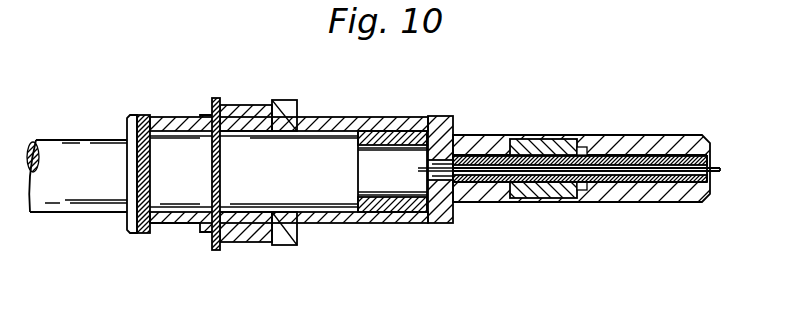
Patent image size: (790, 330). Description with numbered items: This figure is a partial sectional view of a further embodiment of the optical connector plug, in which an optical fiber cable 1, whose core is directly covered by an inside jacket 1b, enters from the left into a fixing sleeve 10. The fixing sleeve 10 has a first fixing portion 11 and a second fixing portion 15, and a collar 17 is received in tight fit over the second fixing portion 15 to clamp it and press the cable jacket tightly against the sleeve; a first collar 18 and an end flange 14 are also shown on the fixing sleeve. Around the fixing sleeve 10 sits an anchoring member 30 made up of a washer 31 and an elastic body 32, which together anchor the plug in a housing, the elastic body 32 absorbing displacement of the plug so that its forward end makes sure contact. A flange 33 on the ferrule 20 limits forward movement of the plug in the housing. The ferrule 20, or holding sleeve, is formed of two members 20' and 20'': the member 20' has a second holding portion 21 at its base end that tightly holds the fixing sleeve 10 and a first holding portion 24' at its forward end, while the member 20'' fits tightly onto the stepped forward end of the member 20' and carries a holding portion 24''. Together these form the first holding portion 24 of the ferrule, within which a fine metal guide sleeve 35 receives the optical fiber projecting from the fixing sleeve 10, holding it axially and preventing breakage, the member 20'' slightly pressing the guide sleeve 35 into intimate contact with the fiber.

The optical fiber cable 1 is at (70, 138).
The inside jacket 1b is at (442, 181).
The fixing sleeve 10 is at (323, 126).
The first fixing portion 11 is at (238, 135).
The flange 14 is at (142, 234).
The second fixing portion 15 is at (380, 145).
The collar 17 is at (172, 228).
The first collar 18 is at (392, 212).
The ferrule 20 is at (582, 128).
The member of the ferrule 20' is at (582, 146).
The member of the ferrule 20'' is at (582, 146).
The second holding portion 21 is at (416, 116).
The first holding portion 24 is at (544, 206).
The first holding portion 24' is at (544, 188).
The holding portion 24'' is at (600, 194).
The anchoring member 30 is at (275, 294).
The washer 31 is at (217, 250).
The elastic body 32 is at (253, 243).
The flange 33 is at (286, 100).
The guide sleeve 35 is at (667, 183).